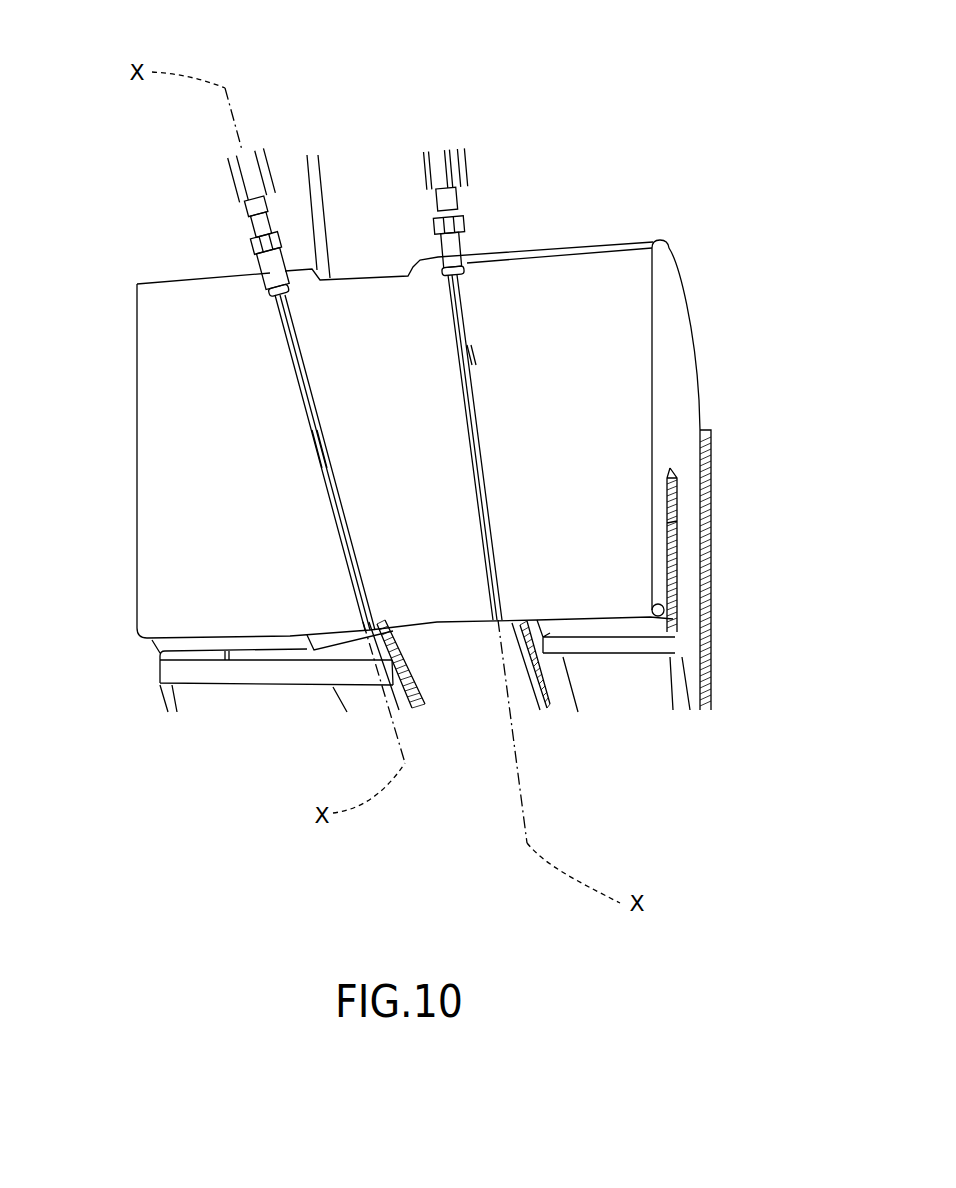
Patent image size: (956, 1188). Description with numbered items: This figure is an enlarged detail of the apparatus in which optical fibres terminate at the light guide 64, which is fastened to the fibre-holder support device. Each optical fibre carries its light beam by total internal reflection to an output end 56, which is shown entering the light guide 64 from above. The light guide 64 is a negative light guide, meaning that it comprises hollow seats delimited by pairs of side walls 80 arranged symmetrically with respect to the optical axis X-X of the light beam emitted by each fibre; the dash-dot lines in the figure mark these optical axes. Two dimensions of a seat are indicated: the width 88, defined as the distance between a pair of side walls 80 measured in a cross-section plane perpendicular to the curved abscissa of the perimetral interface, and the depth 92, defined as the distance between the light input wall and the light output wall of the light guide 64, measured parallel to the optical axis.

The output end 56 is at (282, 238).
The light guide 64 is at (620, 360).
The side wall 80 is at (340, 540).
The width 88 is at (345, 437).
The depth 92 is at (102, 283).